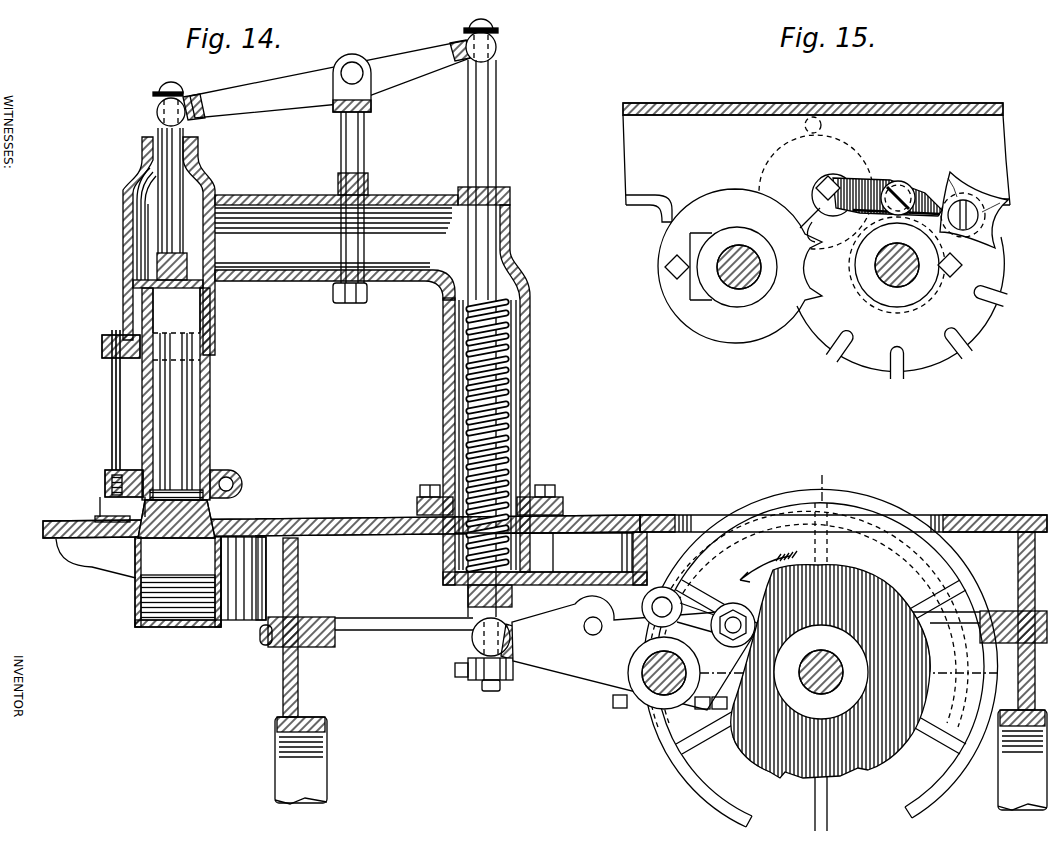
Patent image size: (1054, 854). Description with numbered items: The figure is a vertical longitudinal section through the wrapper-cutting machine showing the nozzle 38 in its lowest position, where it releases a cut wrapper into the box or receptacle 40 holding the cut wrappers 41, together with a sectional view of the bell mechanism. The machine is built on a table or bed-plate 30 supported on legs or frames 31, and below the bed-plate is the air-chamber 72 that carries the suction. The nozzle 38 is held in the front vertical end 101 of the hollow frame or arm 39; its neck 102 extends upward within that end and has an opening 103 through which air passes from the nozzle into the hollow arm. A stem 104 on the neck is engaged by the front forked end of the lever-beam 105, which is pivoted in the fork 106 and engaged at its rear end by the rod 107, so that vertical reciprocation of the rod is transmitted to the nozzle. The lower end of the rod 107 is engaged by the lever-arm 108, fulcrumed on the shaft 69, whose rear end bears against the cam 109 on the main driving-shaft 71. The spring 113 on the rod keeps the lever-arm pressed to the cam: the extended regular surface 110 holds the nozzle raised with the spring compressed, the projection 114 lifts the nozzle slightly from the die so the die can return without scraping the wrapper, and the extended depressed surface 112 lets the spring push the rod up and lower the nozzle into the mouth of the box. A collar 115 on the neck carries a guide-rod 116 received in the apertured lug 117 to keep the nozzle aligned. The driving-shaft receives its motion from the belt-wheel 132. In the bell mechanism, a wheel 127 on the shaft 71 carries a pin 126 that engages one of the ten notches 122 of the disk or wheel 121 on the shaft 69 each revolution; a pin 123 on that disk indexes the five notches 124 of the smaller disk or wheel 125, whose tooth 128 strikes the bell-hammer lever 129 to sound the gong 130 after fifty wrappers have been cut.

In FIG. 14, the table or bed-plate 30 is at (545, 515).
In FIG. 14, the legs or frames 31 is at (653, 671).
In FIG. 14, the nozzle 38 is at (140, 501).
In FIG. 14, the hollow frame or arm 39 is at (362, 243).
In FIG. 14, the box or receptacle 40 is at (96, 574).
In FIG. 14, the cut wrappers 41 is at (200, 582).
In FIG. 14, the shaft 69 is at (648, 694).
In FIG. 15, the shaft 69 is at (887, 288).
In FIG. 14, the main driving-shaft 71 is at (820, 658).
In FIG. 15, the main driving-shaft 71 is at (722, 283).
In FIG. 14, the air-chamber 72 is at (544, 552).
In FIG. 14, the front vertical end 101 is at (123, 193).
In FIG. 14, the neck 102 is at (211, 397).
In FIG. 14, the opening 103 is at (176, 324).
In FIG. 14, the stem 104 is at (198, 151).
In FIG. 14, the lever-beam 105 is at (326, 80).
In FIG. 14, the fork 106 is at (367, 96).
In FIG. 14, the rod 107 is at (497, 128).
In FIG. 14, the lever-arm 108 is at (545, 653).
In FIG. 14, the cam 109 is at (913, 638).
In FIG. 14, the extended regular surface 110 is at (856, 588).
In FIG. 14, the extended depressed surface 112 is at (719, 599).
In FIG. 14, the spring 113 is at (505, 404).
In FIG. 14, the projection 114 is at (758, 773).
In FIG. 14, the collar 115 is at (105, 478).
In FIG. 14, the guide-rod 116 is at (112, 410).
In FIG. 14, the apertured lug 117 is at (102, 344).
In FIG. 15, the disk or wheel 121 is at (904, 267).
In FIG. 15, the notches 122 is at (993, 292).
In FIG. 15, the pin 123 is at (963, 268).
In FIG. 15, the notches 124 is at (957, 195).
In FIG. 15, the smaller disk or wheel 125 is at (980, 205).
In FIG. 15, the pin 126 is at (672, 264).
In FIG. 15, the wheel 127 is at (740, 340).
In FIG. 15, the tooth 128 is at (912, 208).
In FIG. 15, the bell-hammer lever 129 is at (867, 202).
In FIG. 15, the gong 130 is at (785, 156).
In FIG. 14, the belt-wheel 132 is at (850, 500).